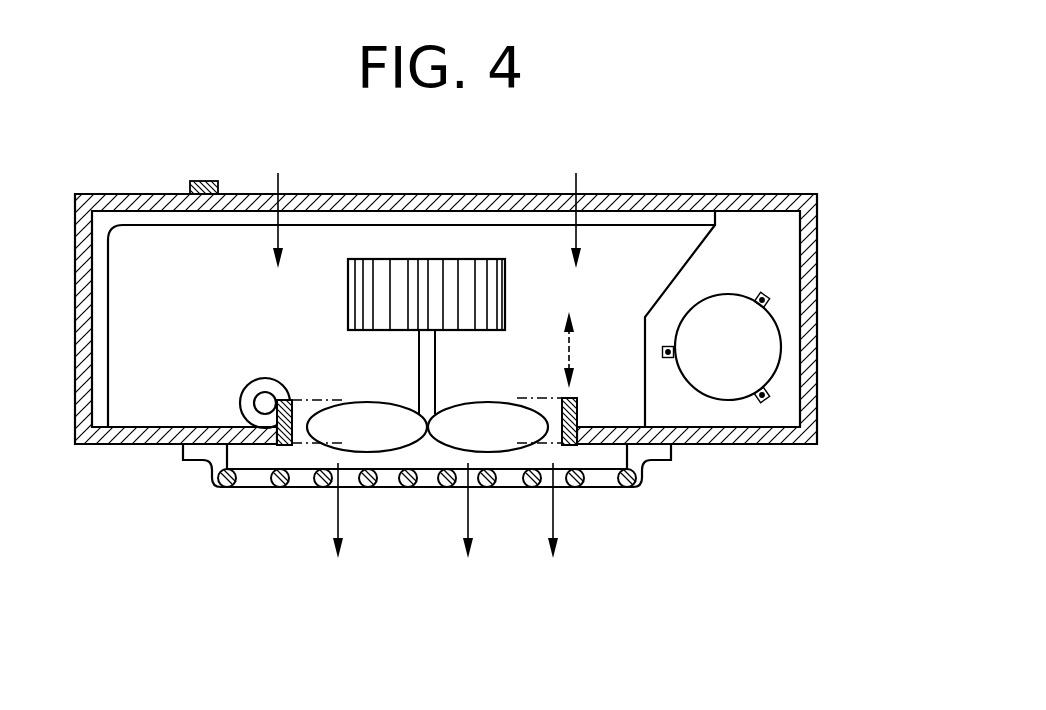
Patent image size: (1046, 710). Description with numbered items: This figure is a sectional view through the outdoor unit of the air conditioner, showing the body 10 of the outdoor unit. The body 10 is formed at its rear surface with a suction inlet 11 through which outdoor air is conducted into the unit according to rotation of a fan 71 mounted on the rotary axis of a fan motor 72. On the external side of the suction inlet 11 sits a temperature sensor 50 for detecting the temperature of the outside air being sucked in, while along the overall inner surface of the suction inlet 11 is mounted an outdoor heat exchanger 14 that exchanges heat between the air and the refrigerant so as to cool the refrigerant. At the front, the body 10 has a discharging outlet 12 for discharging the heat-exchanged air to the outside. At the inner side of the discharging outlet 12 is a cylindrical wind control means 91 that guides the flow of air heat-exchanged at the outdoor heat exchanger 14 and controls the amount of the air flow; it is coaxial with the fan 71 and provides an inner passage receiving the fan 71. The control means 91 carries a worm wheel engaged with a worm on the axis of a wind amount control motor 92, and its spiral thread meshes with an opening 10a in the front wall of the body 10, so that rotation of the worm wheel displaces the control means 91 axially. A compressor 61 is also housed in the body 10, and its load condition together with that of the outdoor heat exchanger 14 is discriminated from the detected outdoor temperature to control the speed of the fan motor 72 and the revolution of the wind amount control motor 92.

The body 10 is at (744, 174).
The opening 10a is at (268, 446).
The suction inlet 11 is at (483, 193).
The discharging outlet 12 is at (602, 481).
The outdoor heat exchanger 14 is at (156, 236).
The temperature sensor 50 is at (202, 181).
The compressor 61 is at (755, 348).
The fan 71 is at (500, 440).
The fan motor 72 is at (503, 258).
The wind control means 91 is at (281, 446).
The wind amount control motor 92 is at (242, 412).